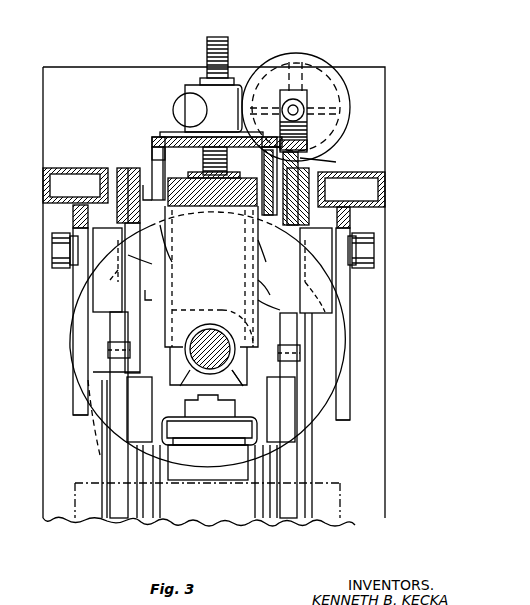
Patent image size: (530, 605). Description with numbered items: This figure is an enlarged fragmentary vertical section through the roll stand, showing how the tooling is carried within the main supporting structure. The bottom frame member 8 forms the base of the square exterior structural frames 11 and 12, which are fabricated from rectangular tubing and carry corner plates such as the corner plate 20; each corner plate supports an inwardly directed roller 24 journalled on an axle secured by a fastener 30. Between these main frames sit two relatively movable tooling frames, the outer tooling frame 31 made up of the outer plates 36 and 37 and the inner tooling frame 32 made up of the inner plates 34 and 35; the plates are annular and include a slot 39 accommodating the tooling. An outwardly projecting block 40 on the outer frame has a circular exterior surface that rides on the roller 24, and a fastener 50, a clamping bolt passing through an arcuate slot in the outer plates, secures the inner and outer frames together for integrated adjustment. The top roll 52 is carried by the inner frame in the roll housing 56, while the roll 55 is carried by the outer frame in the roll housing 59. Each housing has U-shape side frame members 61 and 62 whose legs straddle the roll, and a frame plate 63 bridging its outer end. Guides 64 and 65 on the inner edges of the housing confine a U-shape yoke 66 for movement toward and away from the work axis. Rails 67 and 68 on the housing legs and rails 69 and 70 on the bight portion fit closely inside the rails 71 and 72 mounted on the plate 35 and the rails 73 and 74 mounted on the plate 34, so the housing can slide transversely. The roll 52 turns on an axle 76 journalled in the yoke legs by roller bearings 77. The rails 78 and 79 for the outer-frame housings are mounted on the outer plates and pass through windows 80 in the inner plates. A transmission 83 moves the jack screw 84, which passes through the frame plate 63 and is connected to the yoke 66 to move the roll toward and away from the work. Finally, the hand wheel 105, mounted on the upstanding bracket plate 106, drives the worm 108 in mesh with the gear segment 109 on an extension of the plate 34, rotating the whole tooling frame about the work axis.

The bottom frame member 8 is at (376, 172).
The structural frame 11 is at (39, 342).
The structural frame 12 is at (394, 328).
The corner plate 20 is at (80, 296).
The roller 24 is at (73, 213).
The fastener 30 is at (52, 254).
The outer tooling frame 31 is at (119, 142).
The inner tooling frame 32 is at (140, 142).
The inner plate 34 is at (118, 168).
The inner plate 35 is at (110, 340).
The outer plate 36 is at (300, 166).
The outer plate 37 is at (118, 397).
The slot 39 is at (152, 264).
The outwardly projecting block 40 is at (108, 312).
The fastener 50 is at (300, 350).
The roll 52 is at (310, 420).
The roll 55 is at (343, 507).
The roll housing 56 is at (265, 124).
The roll housing 59 is at (182, 455).
The U-shape side frame member 61 is at (152, 152).
The U-shape side frame member 62 is at (297, 162).
The frame plate 63 is at (153, 137).
The guide 64 is at (186, 284).
The guide 65 is at (232, 224).
The U-shape yoke 66 is at (200, 206).
The rail 67 is at (160, 296).
The rail 68 is at (270, 290).
The rail 69 is at (168, 245).
The rail 70 is at (270, 258).
The rail 71 is at (118, 187).
The rail 72 is at (155, 300).
The rail 73 is at (300, 188).
The rail 74 is at (280, 306).
The axle 76 is at (187, 383).
The roller bearing 77 is at (242, 382).
The rail 78 is at (130, 430).
The rail 79 is at (283, 440).
The window 80 is at (110, 372).
The transmission 83 is at (195, 85).
The jack screw 84 is at (228, 42).
The hand wheel 105 is at (290, 52).
The bracket plate 106 is at (102, 75).
The worm 108 is at (280, 100).
The gear segment 109 is at (300, 115).